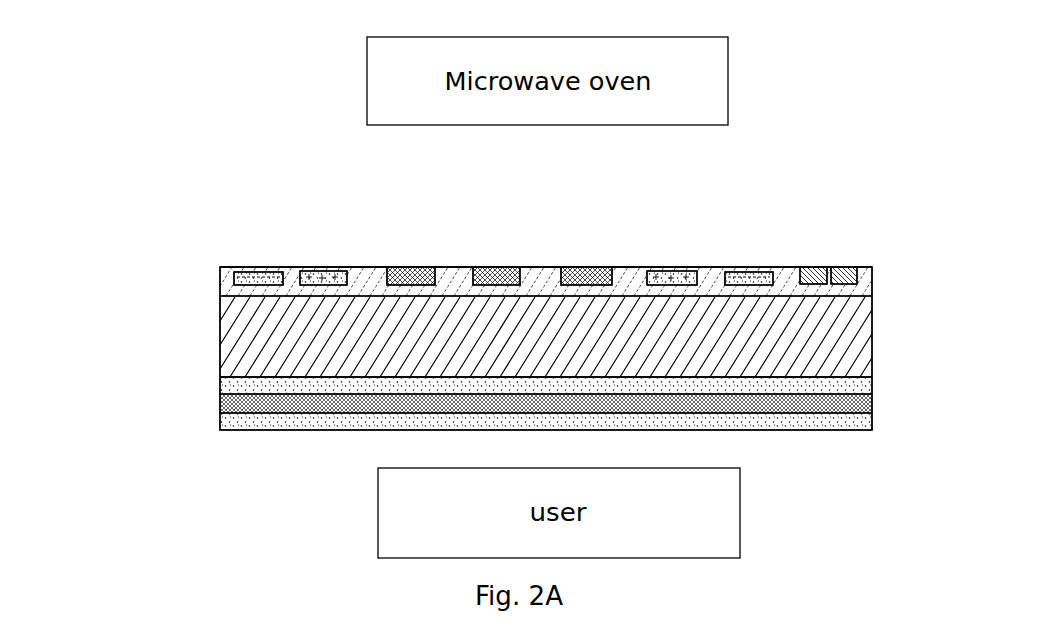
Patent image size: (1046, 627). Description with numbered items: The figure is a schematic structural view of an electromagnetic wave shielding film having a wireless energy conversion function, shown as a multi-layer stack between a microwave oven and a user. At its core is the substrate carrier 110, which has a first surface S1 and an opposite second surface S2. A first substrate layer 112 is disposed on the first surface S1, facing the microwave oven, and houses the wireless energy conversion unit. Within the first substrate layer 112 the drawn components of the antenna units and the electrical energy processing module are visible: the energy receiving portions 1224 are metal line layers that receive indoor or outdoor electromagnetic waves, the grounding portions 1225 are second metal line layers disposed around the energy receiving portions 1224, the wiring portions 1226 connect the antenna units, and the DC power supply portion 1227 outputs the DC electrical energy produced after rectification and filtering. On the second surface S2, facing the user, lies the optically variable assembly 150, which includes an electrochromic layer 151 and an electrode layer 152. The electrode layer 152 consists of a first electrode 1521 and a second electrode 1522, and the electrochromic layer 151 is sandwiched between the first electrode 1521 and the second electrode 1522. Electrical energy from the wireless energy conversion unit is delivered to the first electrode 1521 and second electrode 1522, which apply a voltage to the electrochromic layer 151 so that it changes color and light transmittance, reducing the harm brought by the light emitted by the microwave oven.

The substrate carrier 110 is at (219, 345).
The first substrate layer 112 is at (219, 280).
The energy receiving portion 1224 is at (410, 266).
The grounding portion 1225 is at (253, 266).
The wiring portion 1226 is at (317, 266).
The DC power supply portion 1227 is at (815, 266).
The first surface S1 is at (613, 266).
The second surface S2 is at (219, 377).
The optically variable assembly 150 is at (835, 38).
The electrochromic layer 151 is at (873, 400).
The electrode layer 152 is at (98, 52).
The first electrode 1521 is at (873, 383).
The second electrode 1522 is at (873, 418).